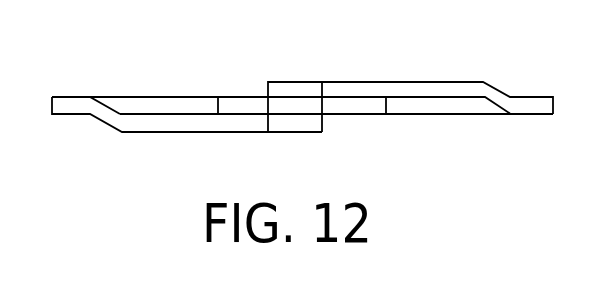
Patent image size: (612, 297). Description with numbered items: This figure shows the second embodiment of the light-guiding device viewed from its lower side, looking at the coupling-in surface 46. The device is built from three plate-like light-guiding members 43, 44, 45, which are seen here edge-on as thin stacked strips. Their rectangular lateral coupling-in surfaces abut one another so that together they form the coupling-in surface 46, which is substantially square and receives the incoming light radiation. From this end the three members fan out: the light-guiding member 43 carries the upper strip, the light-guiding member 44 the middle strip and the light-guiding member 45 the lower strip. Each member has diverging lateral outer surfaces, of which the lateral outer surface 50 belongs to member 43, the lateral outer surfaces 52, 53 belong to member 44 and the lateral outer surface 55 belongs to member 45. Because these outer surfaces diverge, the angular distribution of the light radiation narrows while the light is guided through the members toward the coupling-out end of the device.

The plate-like light-guiding member 43 is at (437, 82).
The plate-like light-guiding member 44 is at (258, 97).
The plate-like light-guiding member 45 is at (141, 131).
The coupling-in surface 46 is at (293, 105).
The lateral outer surface 50 is at (389, 90).
The lateral outer surface 52 is at (360, 105).
The lateral outer surface 53 is at (229, 105).
The lateral outer surface 55 is at (177, 120).